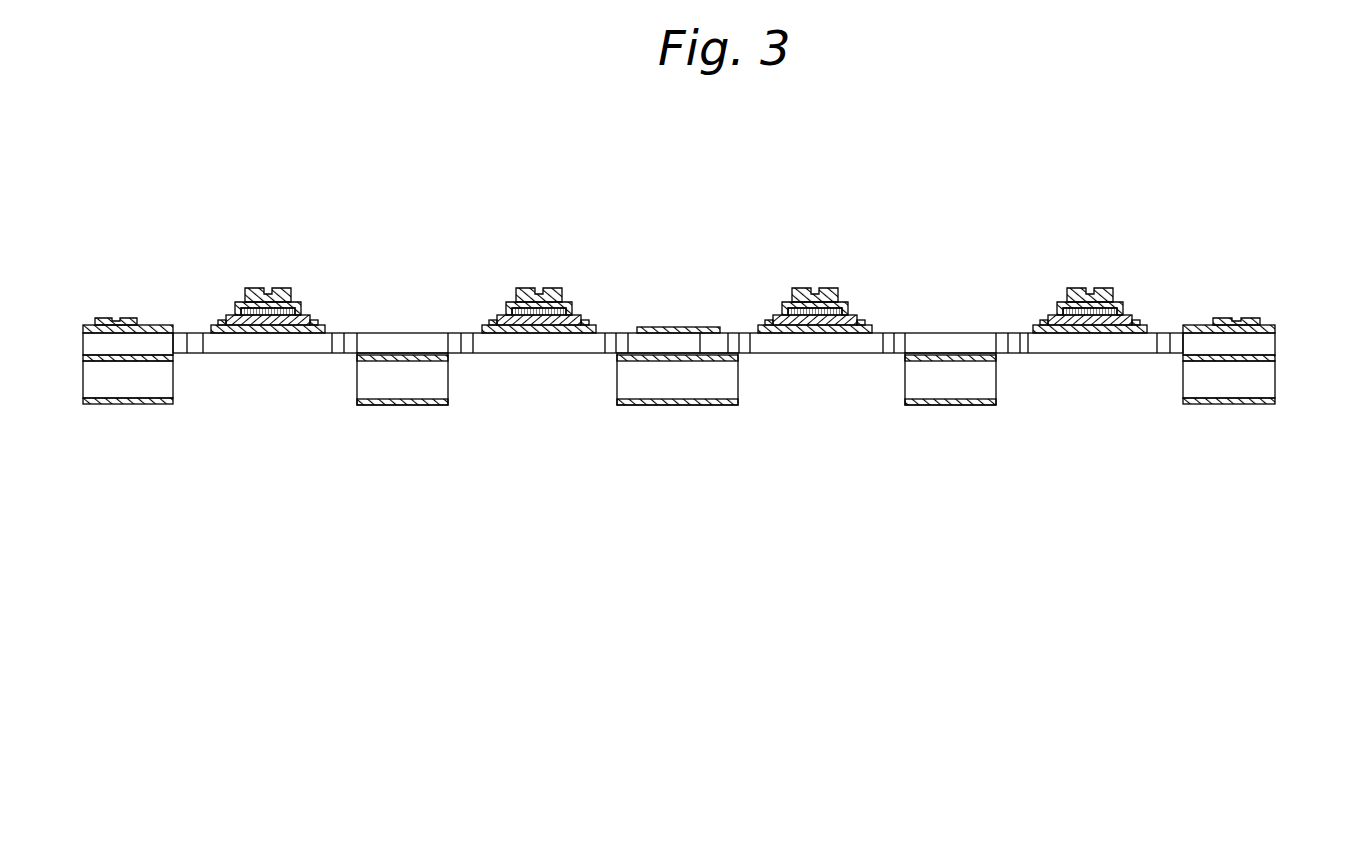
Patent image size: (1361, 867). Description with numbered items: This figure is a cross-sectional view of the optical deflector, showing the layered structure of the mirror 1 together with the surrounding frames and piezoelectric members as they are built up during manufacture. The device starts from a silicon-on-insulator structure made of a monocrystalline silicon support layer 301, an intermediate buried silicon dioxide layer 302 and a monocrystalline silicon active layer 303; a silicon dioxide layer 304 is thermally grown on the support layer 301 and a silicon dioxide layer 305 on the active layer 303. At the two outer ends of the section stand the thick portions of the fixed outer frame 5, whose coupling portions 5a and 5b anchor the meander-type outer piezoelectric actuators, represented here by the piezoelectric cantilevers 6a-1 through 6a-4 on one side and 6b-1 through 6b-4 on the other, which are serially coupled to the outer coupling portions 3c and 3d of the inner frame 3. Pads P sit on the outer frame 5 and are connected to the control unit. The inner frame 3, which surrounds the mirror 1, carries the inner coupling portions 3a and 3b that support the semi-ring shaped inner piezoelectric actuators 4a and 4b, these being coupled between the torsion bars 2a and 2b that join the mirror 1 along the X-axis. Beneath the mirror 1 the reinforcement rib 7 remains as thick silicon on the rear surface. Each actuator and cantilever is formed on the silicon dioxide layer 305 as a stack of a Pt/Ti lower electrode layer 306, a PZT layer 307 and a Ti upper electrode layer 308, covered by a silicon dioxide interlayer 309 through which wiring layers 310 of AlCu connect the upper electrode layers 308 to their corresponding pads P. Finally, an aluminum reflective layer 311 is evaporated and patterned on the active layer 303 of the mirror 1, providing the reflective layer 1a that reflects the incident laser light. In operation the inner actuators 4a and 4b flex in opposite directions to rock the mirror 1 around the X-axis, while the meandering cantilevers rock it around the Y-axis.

The mirror 1 is at (674, 231).
The reflective layer 1a is at (704, 326).
The torsion bar 2a is at (612, 320).
The torsion bar 2b is at (742, 320).
The inner frame 3 is at (448, 327).
The inner coupling portion 3a is at (463, 319).
The inner coupling portion 3b is at (892, 320).
The outer coupling portion 3c is at (343, 319).
The outer coupling portion 3d is at (1007, 320).
The inner piezoelectric actuator 4a is at (539, 284).
The inner piezoelectric actuator 4b is at (815, 284).
The outer frame 5 is at (722, 332).
The coupling portion 5a is at (187, 317).
The coupling portion 5b is at (1167, 367).
The piezoelectric cantilever 6a-1 is at (268, 242).
The piezoelectric cantilever 6a-4 is at (268, 284).
The piezoelectric cantilever 6b-1 is at (1119, 244).
The piezoelectric cantilever 6b-4 is at (1119, 267).
The reinforcement rib 7 is at (738, 410).
The pad P is at (117, 313).
The support layer 301 is at (1268, 383).
The intermediate silicon dioxide layer 302 is at (1273, 357).
The active layer 303 is at (1268, 343).
The silicon dioxide layer 304 is at (1278, 403).
The silicon dioxide layer 305 is at (1033, 328).
The lower electrode layer 306 is at (1128, 323).
The PZT layer 307 is at (1125, 316).
The upper electrode layer 308 is at (1090, 284).
The silicon dioxide interlayer 309 is at (1275, 328).
The wiring layer 310 is at (711, 269).
The reflective layer 311 is at (668, 326).